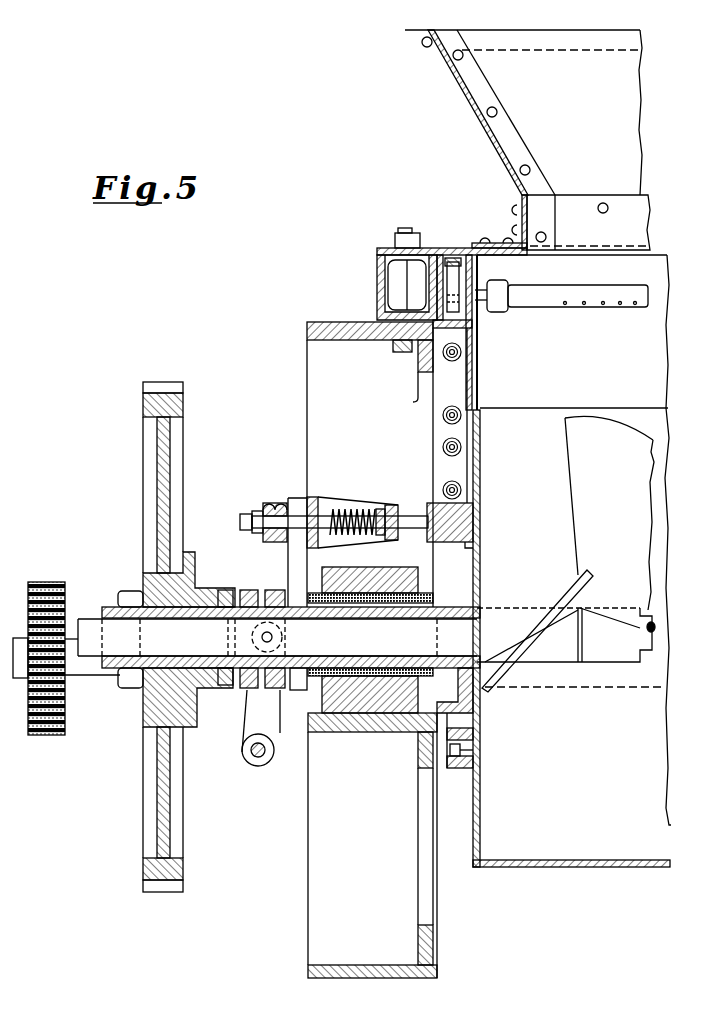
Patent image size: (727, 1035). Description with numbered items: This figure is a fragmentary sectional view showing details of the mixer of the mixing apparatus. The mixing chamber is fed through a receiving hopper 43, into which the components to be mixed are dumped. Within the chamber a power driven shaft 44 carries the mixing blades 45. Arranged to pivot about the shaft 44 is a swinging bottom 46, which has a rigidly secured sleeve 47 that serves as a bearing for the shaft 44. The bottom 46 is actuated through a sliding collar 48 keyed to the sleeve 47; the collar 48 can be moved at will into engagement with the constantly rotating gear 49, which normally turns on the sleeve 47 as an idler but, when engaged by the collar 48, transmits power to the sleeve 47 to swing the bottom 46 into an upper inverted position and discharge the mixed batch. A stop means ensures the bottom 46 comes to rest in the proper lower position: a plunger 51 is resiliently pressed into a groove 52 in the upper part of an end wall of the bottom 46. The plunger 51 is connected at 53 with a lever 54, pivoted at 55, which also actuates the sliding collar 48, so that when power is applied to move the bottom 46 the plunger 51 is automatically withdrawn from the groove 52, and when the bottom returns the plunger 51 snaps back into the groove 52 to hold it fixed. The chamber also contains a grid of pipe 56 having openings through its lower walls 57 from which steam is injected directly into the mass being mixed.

The receiving hopper 43 is at (527, 140).
The power driven shaft 44 is at (655, 627).
The mixing blades 45 is at (626, 480).
The swinging bottom 46 is at (531, 868).
The sleeve 47 is at (300, 674).
The sliding collar 48 is at (248, 590).
The gear 49 is at (183, 886).
The plunger 51 is at (430, 506).
The groove 52 is at (468, 545).
The connection 53 is at (262, 512).
The lever 54 is at (288, 548).
The pivot 55 is at (254, 758).
The grid of pipe 56 is at (598, 306).
The openings 57 is at (636, 306).